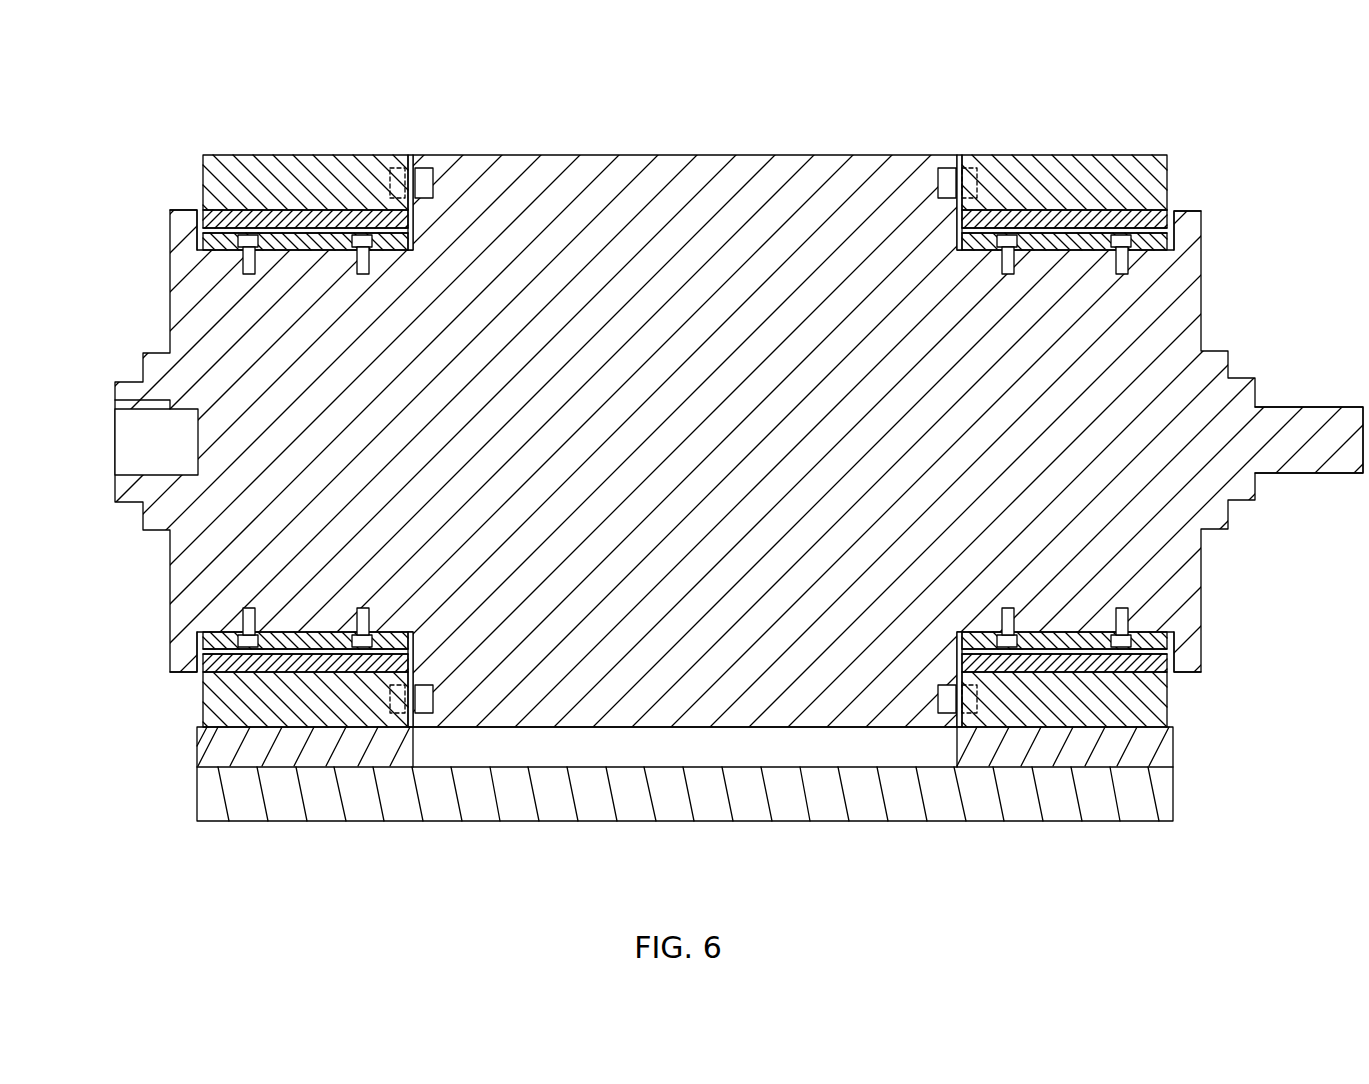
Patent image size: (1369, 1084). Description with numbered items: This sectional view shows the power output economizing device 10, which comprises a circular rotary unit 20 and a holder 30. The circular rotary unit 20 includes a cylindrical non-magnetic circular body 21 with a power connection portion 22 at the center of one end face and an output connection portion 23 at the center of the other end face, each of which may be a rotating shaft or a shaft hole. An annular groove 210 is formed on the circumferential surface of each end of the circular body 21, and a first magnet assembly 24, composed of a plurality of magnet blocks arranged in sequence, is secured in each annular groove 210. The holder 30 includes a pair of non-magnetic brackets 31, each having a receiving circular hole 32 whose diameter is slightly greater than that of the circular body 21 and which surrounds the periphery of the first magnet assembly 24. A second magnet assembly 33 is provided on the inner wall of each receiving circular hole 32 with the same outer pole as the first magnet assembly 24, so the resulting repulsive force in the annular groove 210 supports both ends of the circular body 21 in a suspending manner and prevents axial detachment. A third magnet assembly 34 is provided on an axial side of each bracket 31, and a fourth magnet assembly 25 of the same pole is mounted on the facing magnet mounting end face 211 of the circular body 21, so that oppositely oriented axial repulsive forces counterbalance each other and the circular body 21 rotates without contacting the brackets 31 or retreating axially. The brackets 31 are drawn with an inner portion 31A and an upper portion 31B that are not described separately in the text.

The power output economizing device 10 is at (48, 73).
The circular rotary unit 20 is at (680, 152).
The circular body 21 is at (727, 190).
The power connection portion 22 is at (128, 482).
The output connection portion 23 is at (1309, 473).
The first magnet assembly 24 is at (278, 240).
The fourth magnet assembly 25 is at (423, 175).
The holder 30 is at (213, 738).
The bracket 31 is at (203, 682).
The lower block inner portion 31A is at (210, 712).
The upper block 31B is at (220, 178).
The receiving circular hole 32 is at (333, 210).
The second magnet assembly 33 is at (307, 173).
The third magnet assembly 34 is at (398, 170).
The annular groove 210 is at (203, 232).
The magnet mounting end face 211 is at (413, 230).